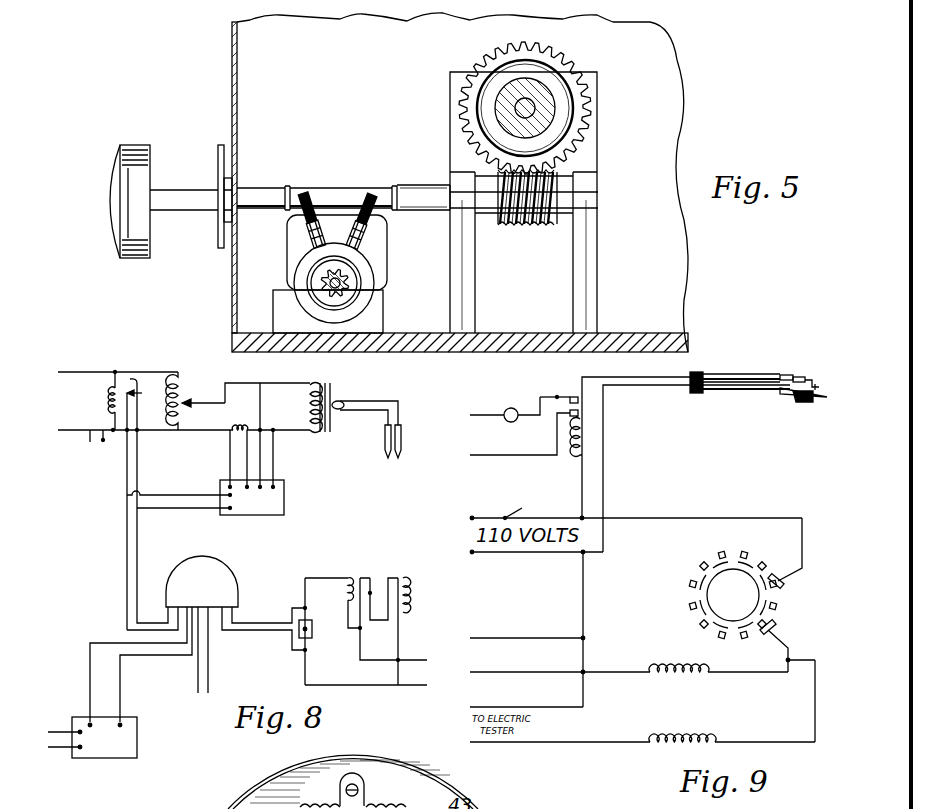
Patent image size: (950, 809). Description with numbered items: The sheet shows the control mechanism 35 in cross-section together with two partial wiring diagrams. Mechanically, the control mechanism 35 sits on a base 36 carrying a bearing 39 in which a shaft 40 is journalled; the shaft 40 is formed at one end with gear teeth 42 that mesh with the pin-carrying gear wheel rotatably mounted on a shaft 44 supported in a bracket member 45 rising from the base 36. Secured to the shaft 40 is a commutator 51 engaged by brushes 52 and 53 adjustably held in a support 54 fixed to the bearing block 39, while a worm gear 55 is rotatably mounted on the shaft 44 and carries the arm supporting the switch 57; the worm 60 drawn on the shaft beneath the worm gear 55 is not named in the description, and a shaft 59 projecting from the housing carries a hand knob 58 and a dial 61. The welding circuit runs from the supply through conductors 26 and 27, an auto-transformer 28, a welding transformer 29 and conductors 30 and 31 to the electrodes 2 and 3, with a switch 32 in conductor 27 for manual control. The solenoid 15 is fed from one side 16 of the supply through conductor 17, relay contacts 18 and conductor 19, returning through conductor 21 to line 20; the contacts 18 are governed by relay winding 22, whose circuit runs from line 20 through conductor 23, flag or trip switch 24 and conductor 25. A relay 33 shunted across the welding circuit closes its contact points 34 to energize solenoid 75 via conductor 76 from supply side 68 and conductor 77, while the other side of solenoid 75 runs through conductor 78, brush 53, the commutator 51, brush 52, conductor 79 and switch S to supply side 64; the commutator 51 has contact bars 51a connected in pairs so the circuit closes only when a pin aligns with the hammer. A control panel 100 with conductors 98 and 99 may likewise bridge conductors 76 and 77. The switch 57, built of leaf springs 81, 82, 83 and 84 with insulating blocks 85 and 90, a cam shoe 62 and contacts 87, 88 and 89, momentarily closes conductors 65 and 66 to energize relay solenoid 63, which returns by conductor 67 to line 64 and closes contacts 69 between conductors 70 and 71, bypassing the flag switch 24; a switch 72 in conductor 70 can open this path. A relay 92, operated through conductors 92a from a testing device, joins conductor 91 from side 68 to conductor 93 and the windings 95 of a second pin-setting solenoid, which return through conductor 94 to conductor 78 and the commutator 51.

In FIG. 8, the electrode 2 is at (386, 448).
In FIG. 8, the electrode 3 is at (399, 450).
In FIG. 8, the solenoid 15 is at (409, 590).
In FIG. 8, the side of power supply 16 is at (410, 660).
In FIG. 8, the conductor 17 is at (360, 640).
In FIG. 8, the relay contacts 18 is at (363, 578).
In FIG. 8, the conductor 19 is at (363, 620).
In FIG. 8, the side of supply line 20 is at (415, 685).
In FIG. 8, the conductor 21 is at (398, 630).
In FIG. 8, the relay winding 22 is at (346, 590).
In FIG. 8, the conductor 23 is at (308, 658).
In FIG. 8, the flag or trip switch 24 is at (313, 630).
In FIG. 8, the conductor 25 is at (330, 566).
In FIG. 8, the conductor 26 is at (102, 356).
In FIG. 8, the conductor 27 is at (62, 432).
In FIG. 8, the auto-transformer 28 is at (181, 385).
In FIG. 8, the welding transformer 29 is at (305, 410).
In FIG. 8, the conductor 30 is at (341, 412).
In FIG. 8, the conductor 31 is at (385, 401).
In FIG. 8, the switch 32 is at (98, 440).
In FIG. 8, the relay 33 is at (110, 396).
In FIG. 8, the contact points 34 is at (146, 501).
In FIG. 8, the control mechanism 35 is at (225, 585).
In FIG. 5, the base 36 is at (622, 345).
In FIG. 5, the bearing 39 is at (370, 312).
In FIG. 5, the shaft 40 is at (328, 284).
In FIG. 5, the gear teeth 42 is at (330, 292).
In FIG. 5, the shaft 44 is at (535, 105).
In FIG. 5, the bracket member 45 is at (560, 302).
In FIG. 5, the commutator 51 is at (305, 278).
In FIG. 9, the commutator 51 is at (695, 578).
In FIG. 9, the contact bars 51a is at (740, 560).
In FIG. 5, the brush 52 is at (315, 200).
In FIG. 9, the brush 52 is at (781, 577).
In FIG. 5, the brush 53 is at (375, 200).
In FIG. 9, the brush 53 is at (778, 628).
In FIG. 5, the support 54 is at (375, 258).
In FIG. 5, the worm gear 55 is at (590, 98).
In FIG. 9, the switch 57 is at (740, 375).
In FIG. 5, the hand knob 58 is at (137, 165).
In FIG. 5, the shaft 59 is at (410, 200).
In FIG. 5, the worm 60 is at (510, 228).
In FIG. 5, the dial 61 is at (218, 165).
In FIG. 9, the cam shoe 62 is at (815, 403).
In FIG. 9, the relay solenoid 63 is at (572, 452).
In FIG. 8, the side of current supply 64 is at (209, 676).
In FIG. 9, the side of current supply 64 is at (482, 516).
In FIG. 9, the conductor 65 is at (672, 387).
In FIG. 9, the conductor 66 is at (668, 380).
In FIG. 9, the conductor 67 is at (580, 510).
In FIG. 8, the side of current supply 68 is at (197, 686).
In FIG. 9, the side of current supply 68 is at (480, 555).
In FIG. 9, the contacts 69 is at (573, 397).
In FIG. 8, the conductor 70 is at (252, 623).
In FIG. 9, the conductor 70 is at (519, 414).
In FIG. 8, the conductor 71 is at (250, 630).
In FIG. 9, the conductor 71 is at (520, 455).
In FIG. 9, the switch 72 is at (515, 408).
In FIG. 9, the solenoid 75 is at (680, 667).
In FIG. 8, the conductor 76 is at (140, 550).
In FIG. 9, the conductor 76 is at (570, 638).
In FIG. 8, the conductor 77 is at (127, 570).
In FIG. 9, the conductor 77 is at (568, 672).
In FIG. 9, the conductor 78 is at (740, 672).
In FIG. 9, the conductor 79 is at (735, 518).
In FIG. 9, the leaf spring 81 is at (750, 392).
In FIG. 9, the leaf spring 82 is at (718, 392).
In FIG. 9, the leaf spring 83 is at (724, 374).
In FIG. 9, the leaf spring 84 is at (700, 372).
In FIG. 9, the block of insulating material 85 is at (798, 398).
In FIG. 9, the contact point 87 is at (816, 382).
In FIG. 9, the contact 88 is at (772, 384).
In FIG. 9, the contact 89 is at (789, 375).
In FIG. 9, the block of insulating material 90 is at (801, 377).
In FIG. 8, the conductor 91 is at (120, 702).
In FIG. 9, the conductor 91 is at (572, 707).
In FIG. 8, the relay 92 is at (135, 748).
In FIG. 8, the conductors 92a is at (60, 735).
In FIG. 8, the conductor 93 is at (90, 700).
In FIG. 9, the conductor 93 is at (584, 745).
In FIG. 9, the conductor 94 is at (770, 742).
In FIG. 9, the windings 95 is at (695, 738).
In FIG. 8, the conductor 98 is at (186, 508).
In FIG. 8, the conductor 99 is at (186, 495).
In FIG. 8, the control panel 100 is at (270, 505).
In FIG. 9, the switch S is at (518, 504).